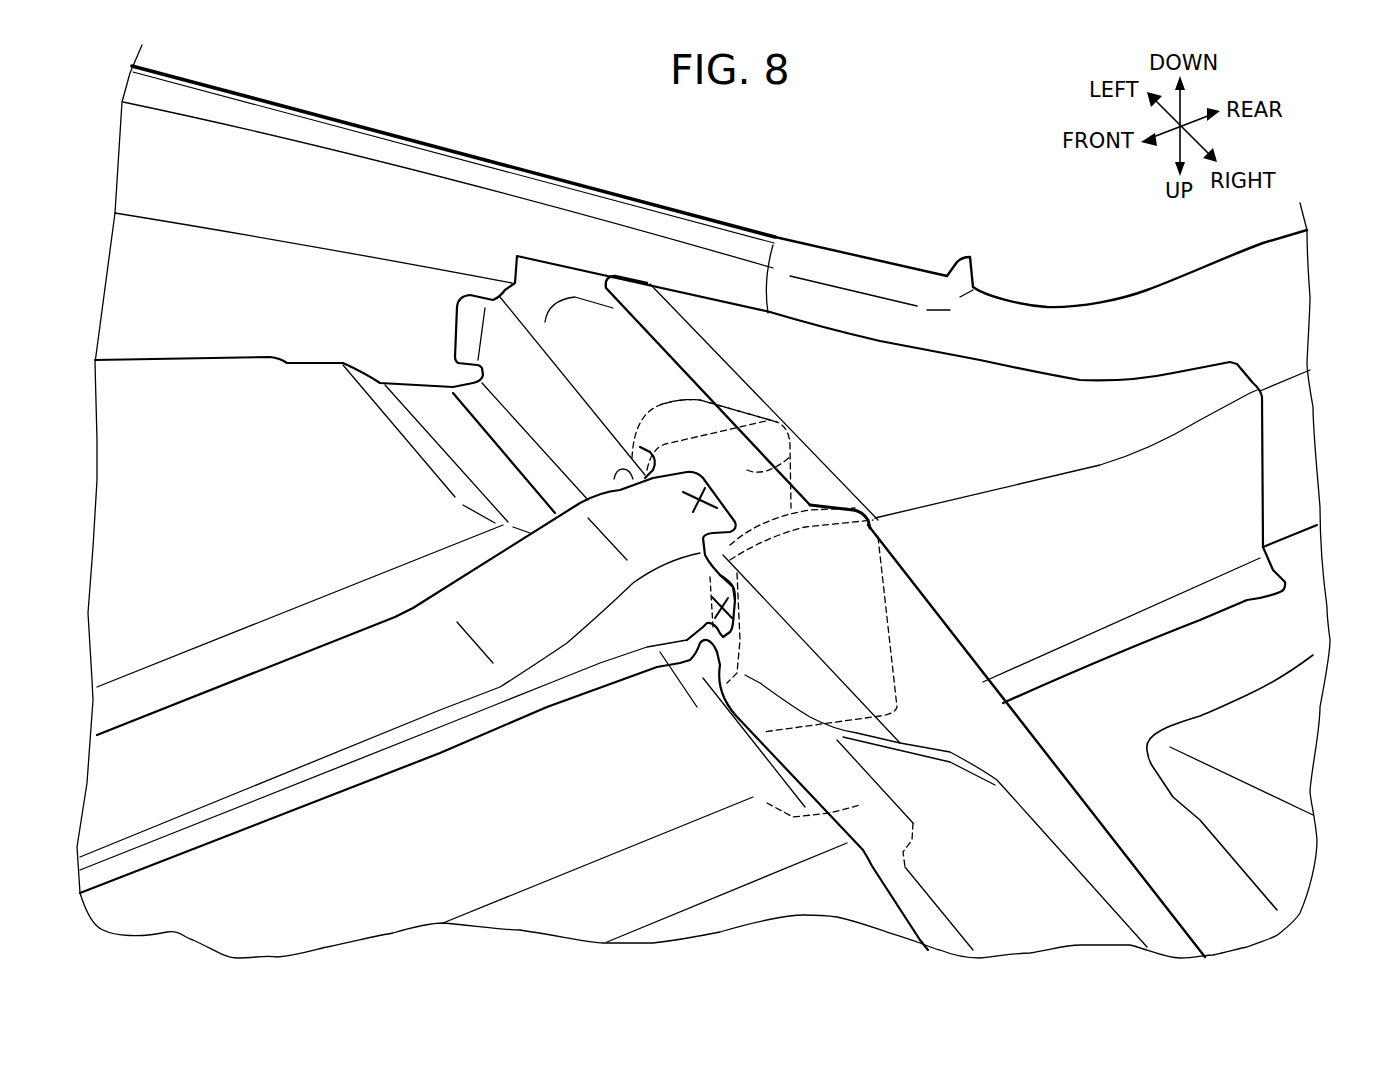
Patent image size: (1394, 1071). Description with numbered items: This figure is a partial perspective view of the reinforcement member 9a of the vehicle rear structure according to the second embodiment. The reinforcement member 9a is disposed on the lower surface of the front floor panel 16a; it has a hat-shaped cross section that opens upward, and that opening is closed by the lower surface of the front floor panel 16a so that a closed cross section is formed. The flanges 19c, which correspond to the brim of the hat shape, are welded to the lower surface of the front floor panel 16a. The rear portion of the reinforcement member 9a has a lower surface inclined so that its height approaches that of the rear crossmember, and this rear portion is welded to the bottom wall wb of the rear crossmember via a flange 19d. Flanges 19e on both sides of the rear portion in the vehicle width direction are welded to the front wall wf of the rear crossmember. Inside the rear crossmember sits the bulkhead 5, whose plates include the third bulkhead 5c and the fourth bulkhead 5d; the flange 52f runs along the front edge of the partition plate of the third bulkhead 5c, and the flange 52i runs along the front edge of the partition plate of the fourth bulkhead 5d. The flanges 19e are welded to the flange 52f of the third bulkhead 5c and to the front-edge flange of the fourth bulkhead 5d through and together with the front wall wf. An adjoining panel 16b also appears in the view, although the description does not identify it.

The bulkhead 5 is at (905, 616).
The third bulkhead 5c is at (853, 573).
The fourth bulkhead 5d is at (787, 457).
The reinforcement member 9a is at (437, 677).
The front floor panel 16a is at (560, 815).
The side panel 16b is at (1283, 635).
The flanges 19c is at (345, 775).
The flange 19d is at (760, 490).
The flanges 19e is at (612, 478).
The flange 52f is at (743, 655).
The flange 52i is at (698, 397).
The bottom wall wb is at (592, 365).
The front wall wf is at (560, 430).